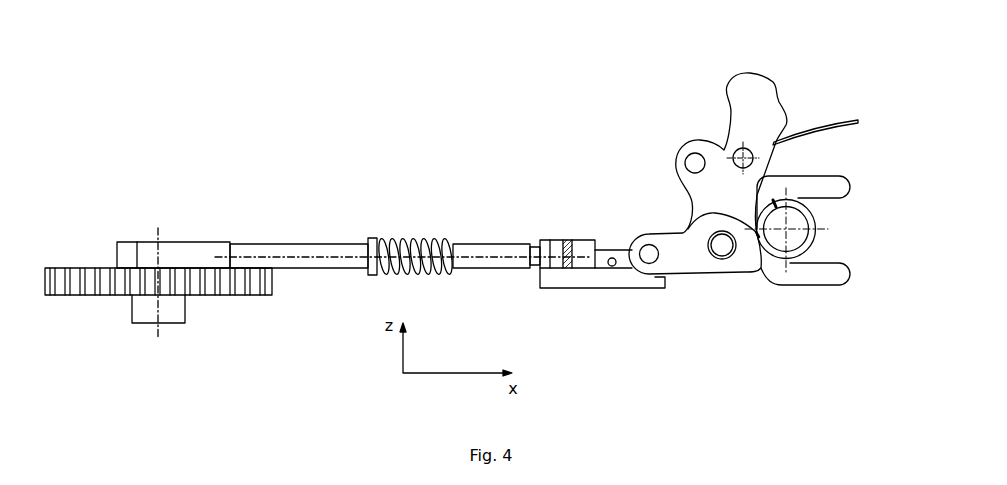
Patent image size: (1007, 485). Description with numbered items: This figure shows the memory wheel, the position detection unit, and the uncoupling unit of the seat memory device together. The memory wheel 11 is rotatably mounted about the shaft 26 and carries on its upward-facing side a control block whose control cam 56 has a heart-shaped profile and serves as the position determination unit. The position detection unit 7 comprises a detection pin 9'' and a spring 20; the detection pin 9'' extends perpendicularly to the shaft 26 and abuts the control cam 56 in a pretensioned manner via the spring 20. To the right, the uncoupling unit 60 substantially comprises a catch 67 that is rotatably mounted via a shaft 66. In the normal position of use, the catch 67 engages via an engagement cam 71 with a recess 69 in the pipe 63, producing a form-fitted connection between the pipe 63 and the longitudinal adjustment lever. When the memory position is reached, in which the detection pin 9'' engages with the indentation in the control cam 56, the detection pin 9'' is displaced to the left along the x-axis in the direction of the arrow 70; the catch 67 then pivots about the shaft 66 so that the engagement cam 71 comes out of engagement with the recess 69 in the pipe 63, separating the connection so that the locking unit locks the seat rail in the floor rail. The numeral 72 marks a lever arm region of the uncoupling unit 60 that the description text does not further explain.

The memory wheel 11 is at (70, 272).
The shaft 26 is at (157, 248).
The control cam 56 is at (173, 250).
The detection pin 9'' is at (405, 223).
The spring 20 is at (415, 242).
The position detection unit 7 is at (569, 190).
The arrow 70 is at (633, 313).
The uncoupling unit 60 is at (665, 84).
The shaft 66 is at (740, 150).
The catch 67 is at (758, 93).
The lever arm 72 is at (670, 236).
The pipe 63 is at (813, 222).
The recess 69 is at (774, 208).
The engagement cam 71 is at (760, 236).